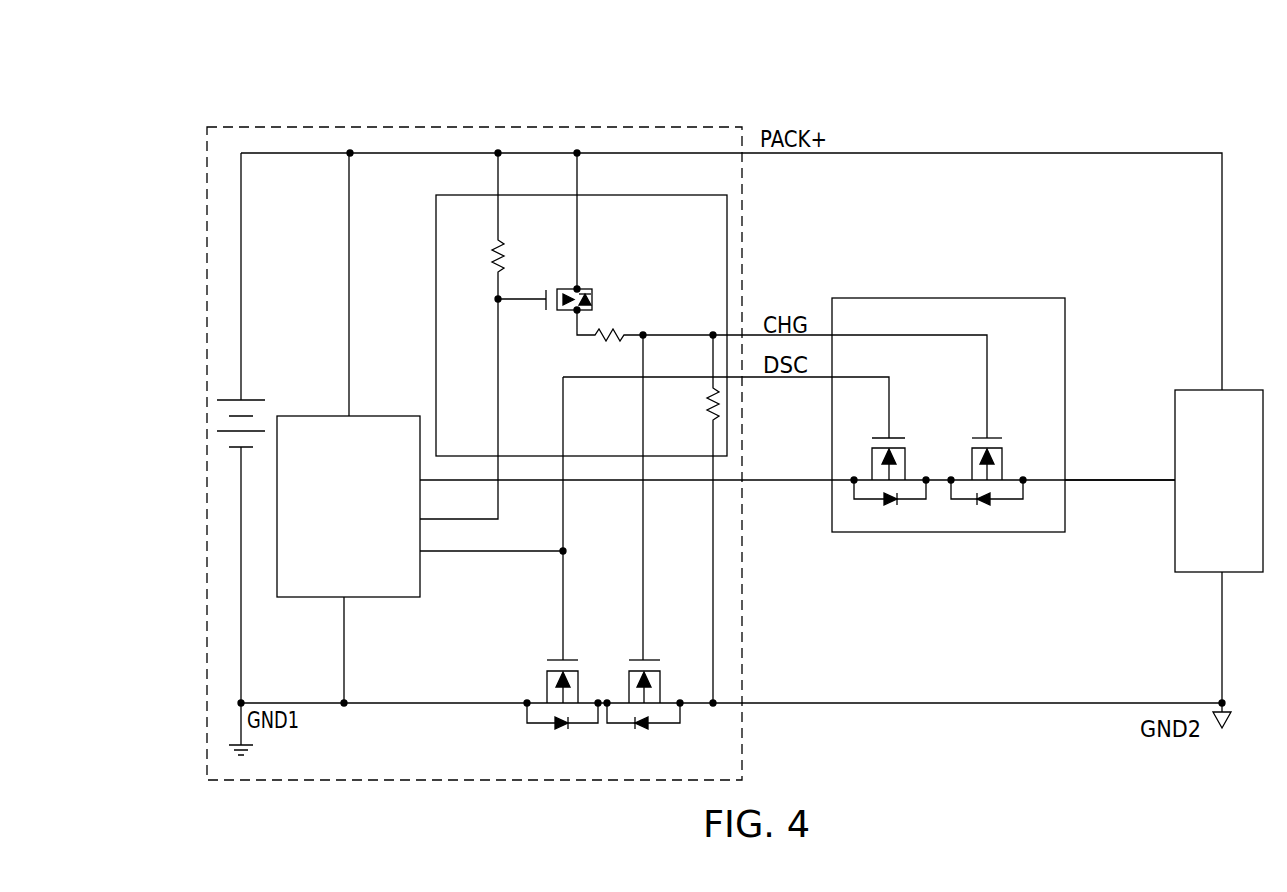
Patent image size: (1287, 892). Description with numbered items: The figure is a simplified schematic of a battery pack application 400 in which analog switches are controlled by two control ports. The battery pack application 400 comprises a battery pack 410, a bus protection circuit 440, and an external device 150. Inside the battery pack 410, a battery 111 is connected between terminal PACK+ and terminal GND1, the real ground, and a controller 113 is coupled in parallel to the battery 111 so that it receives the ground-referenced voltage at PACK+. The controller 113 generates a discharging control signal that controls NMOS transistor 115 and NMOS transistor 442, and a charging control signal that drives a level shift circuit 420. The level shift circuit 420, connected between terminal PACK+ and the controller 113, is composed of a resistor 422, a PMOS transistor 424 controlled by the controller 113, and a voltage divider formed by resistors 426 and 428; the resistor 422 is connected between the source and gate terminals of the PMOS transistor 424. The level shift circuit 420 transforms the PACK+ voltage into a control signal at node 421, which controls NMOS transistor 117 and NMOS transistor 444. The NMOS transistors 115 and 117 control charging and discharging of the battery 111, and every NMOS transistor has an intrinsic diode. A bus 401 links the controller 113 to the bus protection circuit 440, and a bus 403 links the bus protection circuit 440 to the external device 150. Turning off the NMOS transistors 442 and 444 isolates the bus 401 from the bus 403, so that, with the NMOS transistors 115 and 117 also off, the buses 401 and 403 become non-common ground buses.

The battery pack application 400 is at (278, 93).
The battery pack 410 is at (630, 127).
The battery 111 is at (246, 400).
The controller 113 is at (330, 597).
The NMOS transistor 115 is at (547, 659).
The NMOS transistor 117 is at (660, 659).
The level shift circuit 420 is at (642, 195).
The resistor 422 is at (494, 251).
The PMOS transistor 424 is at (546, 291).
The resistor 426 is at (603, 341).
The node 421 is at (645, 334).
The resistor 428 is at (709, 416).
The bus protection circuit 440 is at (990, 298).
The NMOS transistor 442 is at (872, 438).
The NMOS transistor 444 is at (1002, 438).
The bus 401 is at (772, 480).
The bus 403 is at (1150, 481).
The external device 150 is at (1218, 390).